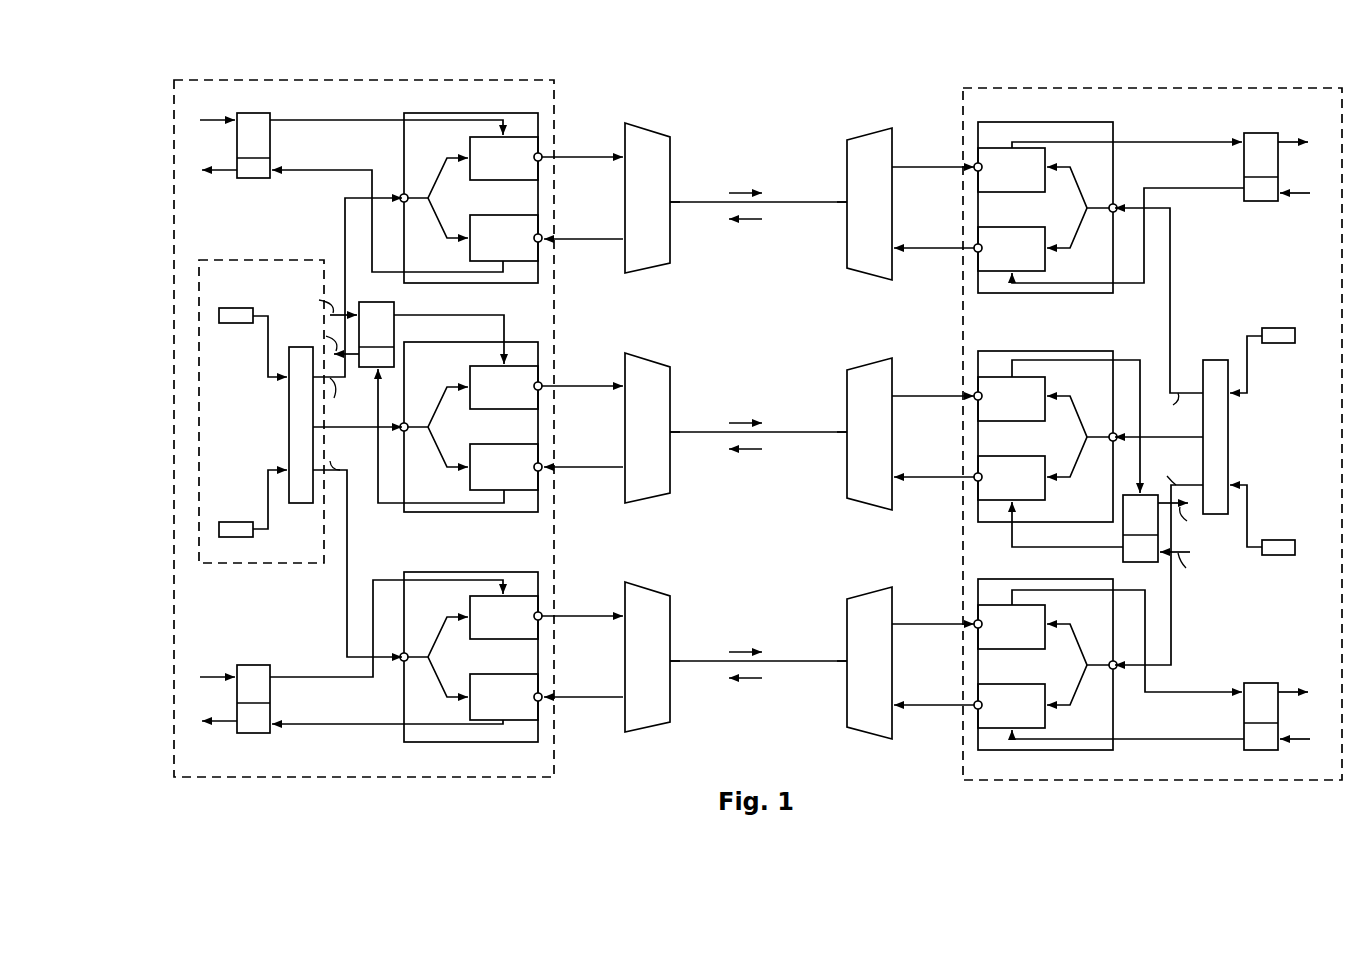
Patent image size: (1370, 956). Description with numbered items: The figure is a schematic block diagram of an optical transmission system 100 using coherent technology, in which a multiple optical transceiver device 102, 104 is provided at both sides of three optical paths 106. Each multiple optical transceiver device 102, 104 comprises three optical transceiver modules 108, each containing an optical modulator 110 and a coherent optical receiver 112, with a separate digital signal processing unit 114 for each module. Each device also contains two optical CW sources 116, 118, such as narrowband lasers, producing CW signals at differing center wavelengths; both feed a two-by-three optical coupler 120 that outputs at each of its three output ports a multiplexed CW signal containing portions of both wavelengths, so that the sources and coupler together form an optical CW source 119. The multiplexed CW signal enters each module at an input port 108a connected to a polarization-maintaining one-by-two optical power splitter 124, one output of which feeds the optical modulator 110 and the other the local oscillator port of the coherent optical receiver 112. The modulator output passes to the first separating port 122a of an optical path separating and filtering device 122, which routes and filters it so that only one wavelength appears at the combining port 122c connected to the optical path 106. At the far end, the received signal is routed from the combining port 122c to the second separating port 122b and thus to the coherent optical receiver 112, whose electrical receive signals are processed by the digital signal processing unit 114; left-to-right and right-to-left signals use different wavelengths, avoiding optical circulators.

The optical transmission system 100 is at (779, 108).
The multiple optical transceiver device 102 is at (441, 78).
The multiple optical transceiver device 104 is at (1188, 87).
The optical path 106 is at (693, 200).
The optical transceiver module 108 is at (505, 131).
The input port 108a is at (402, 196).
The optical modulator 110 is at (757, 432).
The coherent optical receiver 112 is at (757, 434).
The digital signal processing unit 114 is at (757, 431).
The optical CW source 116 is at (239, 308).
The optical CW source 118 is at (239, 522).
The optical CW source 119 is at (280, 563).
The optical 2×3 coupler 120 is at (289, 428).
The optical path separating and filtering device 122 is at (758, 431).
The first separating port 122a is at (622, 150).
The second separating port 122b is at (625, 247).
The combining port 122c is at (672, 209).
The polarization-maintaining 1×2 optical power splitter 124 is at (440, 197).